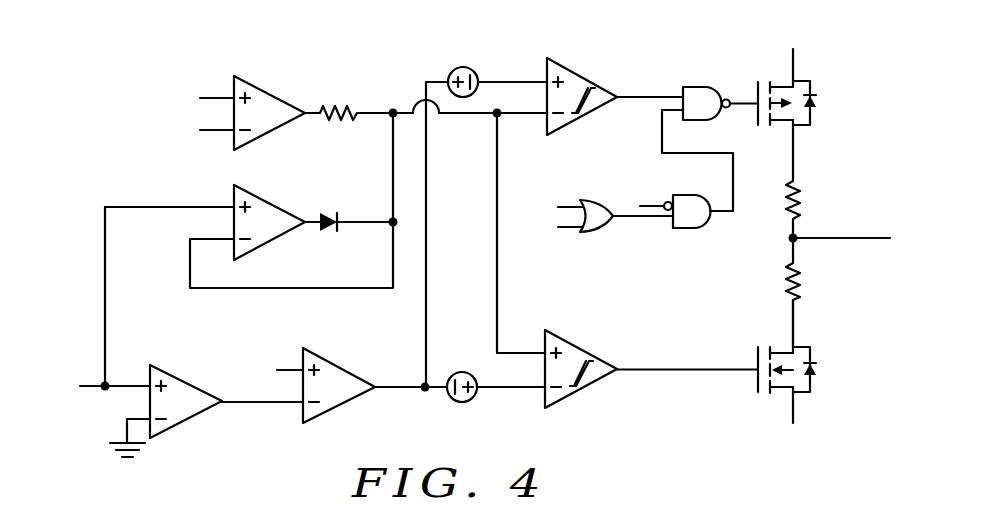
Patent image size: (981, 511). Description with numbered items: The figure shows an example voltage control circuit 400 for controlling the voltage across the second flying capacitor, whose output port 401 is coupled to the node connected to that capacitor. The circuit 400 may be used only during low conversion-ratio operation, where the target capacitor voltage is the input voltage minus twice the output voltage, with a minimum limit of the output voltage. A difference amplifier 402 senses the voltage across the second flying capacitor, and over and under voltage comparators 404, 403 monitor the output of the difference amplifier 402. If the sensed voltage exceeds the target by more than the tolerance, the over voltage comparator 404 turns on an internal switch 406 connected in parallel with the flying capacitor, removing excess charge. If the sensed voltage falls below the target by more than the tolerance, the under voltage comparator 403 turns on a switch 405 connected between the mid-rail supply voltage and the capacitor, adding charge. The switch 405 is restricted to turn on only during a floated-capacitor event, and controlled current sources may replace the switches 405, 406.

The voltage control circuit 400 is at (117, 38).
The output port 401 is at (866, 237).
The difference amplifier 402 is at (274, 97).
The under voltage comparator 403 is at (586, 82).
The over voltage comparator 404 is at (584, 352).
The switch 405 is at (814, 74).
The internal switch 406 is at (814, 346).